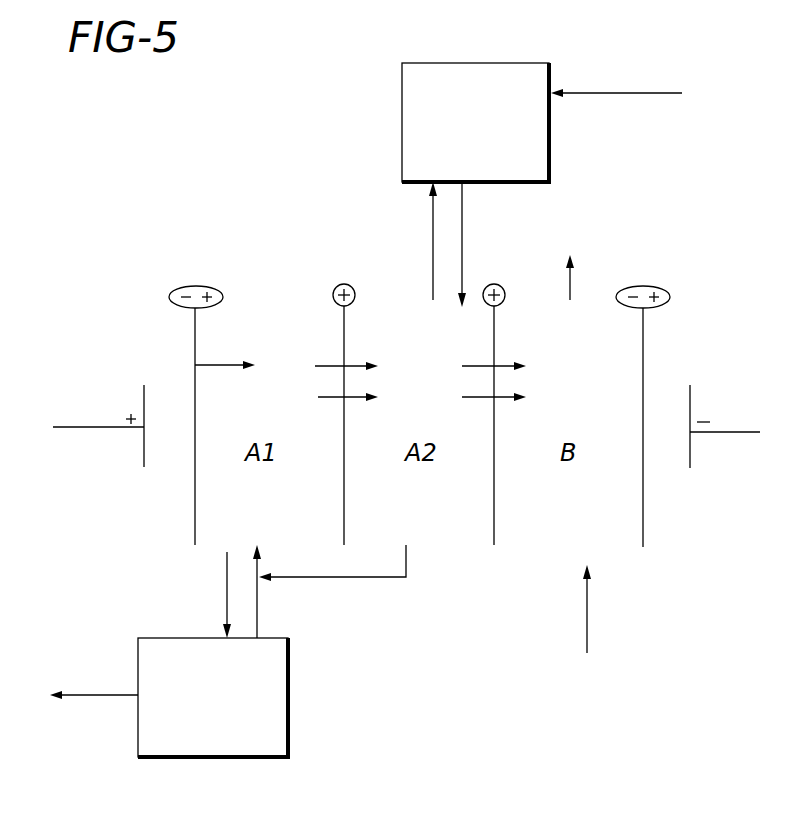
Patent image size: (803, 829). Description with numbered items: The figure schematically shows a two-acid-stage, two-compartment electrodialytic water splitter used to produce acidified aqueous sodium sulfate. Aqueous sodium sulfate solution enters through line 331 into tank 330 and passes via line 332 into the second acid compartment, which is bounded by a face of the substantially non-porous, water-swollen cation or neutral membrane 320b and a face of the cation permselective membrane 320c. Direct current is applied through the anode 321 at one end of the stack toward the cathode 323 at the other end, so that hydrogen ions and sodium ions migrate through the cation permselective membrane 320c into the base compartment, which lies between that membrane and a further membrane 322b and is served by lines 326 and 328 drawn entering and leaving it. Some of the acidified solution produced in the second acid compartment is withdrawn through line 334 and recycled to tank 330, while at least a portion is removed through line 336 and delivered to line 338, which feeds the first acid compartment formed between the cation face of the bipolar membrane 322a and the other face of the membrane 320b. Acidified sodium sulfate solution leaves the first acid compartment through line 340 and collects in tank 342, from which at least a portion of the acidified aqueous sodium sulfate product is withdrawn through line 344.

The tank 330 is at (402, 118).
The line 331 is at (617, 95).
The line 332 is at (462, 233).
The line 334 is at (433, 235).
The product outlet from compartment B 328 is at (570, 283).
The inlet to compartment B 326 is at (587, 636).
The anode 321 is at (144, 448).
The cathode 323 is at (690, 452).
The bipolar membrane 322a is at (195, 540).
The anion permselective membrane 322b is at (643, 537).
The substantially non-porous, water-swollen cation or neutral membrane 320b is at (344, 523).
The cation permselective membrane 320c is at (494, 527).
The line 336 is at (384, 578).
The line 338 is at (257, 612).
The line 340 is at (227, 601).
The tank 342 is at (288, 722).
The line 344 is at (130, 698).